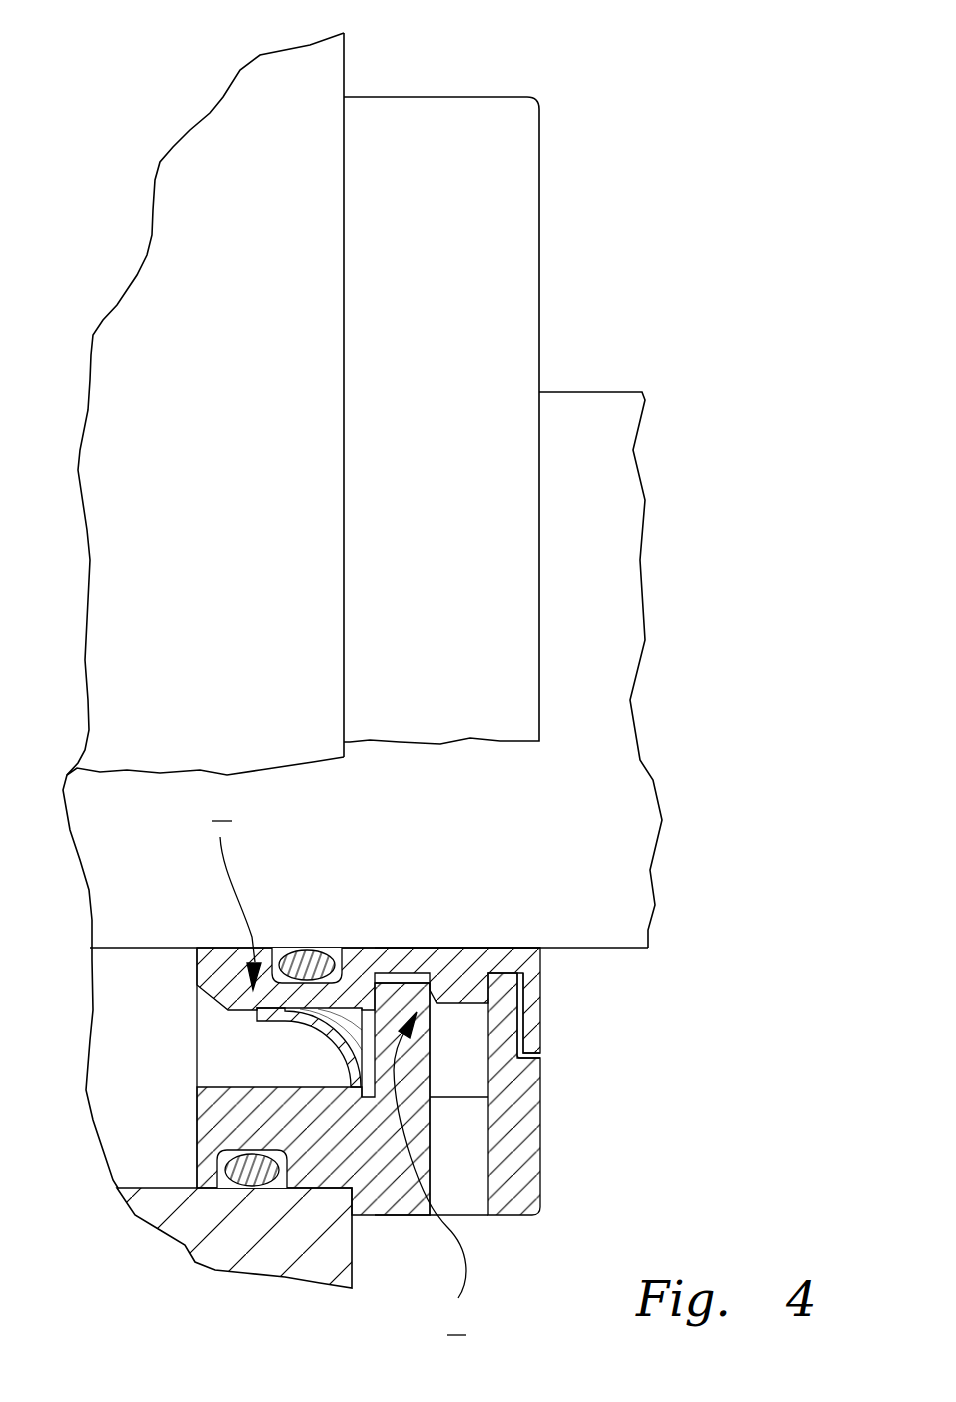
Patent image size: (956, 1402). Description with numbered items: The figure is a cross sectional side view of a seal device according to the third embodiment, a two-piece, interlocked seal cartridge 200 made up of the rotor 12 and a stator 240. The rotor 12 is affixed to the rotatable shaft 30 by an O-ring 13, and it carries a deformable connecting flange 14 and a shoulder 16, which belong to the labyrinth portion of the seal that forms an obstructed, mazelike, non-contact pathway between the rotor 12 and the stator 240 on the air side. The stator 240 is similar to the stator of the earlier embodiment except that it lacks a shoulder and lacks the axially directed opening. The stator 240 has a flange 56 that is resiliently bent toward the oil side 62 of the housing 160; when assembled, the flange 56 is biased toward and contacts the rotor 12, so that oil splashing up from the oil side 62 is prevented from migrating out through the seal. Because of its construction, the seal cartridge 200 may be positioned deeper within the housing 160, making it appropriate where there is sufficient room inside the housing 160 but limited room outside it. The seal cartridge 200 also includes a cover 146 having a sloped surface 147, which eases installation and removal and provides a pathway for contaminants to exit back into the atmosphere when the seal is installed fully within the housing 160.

The seal cartridge 200 is at (592, 144).
The housing 160 is at (220, 451).
The stator 240 is at (468, 441).
The rotatable shaft 30 is at (593, 406).
The rotor 12 is at (240, 977).
The shoulder 16 is at (453, 975).
The O-ring 13 is at (303, 955).
The connecting flange 14 is at (538, 981).
The flange 56 is at (257, 1011).
The oil side 62 is at (150, 1135).
The sloped surface 147 is at (360, 1215).
The cover 146 is at (530, 1218).